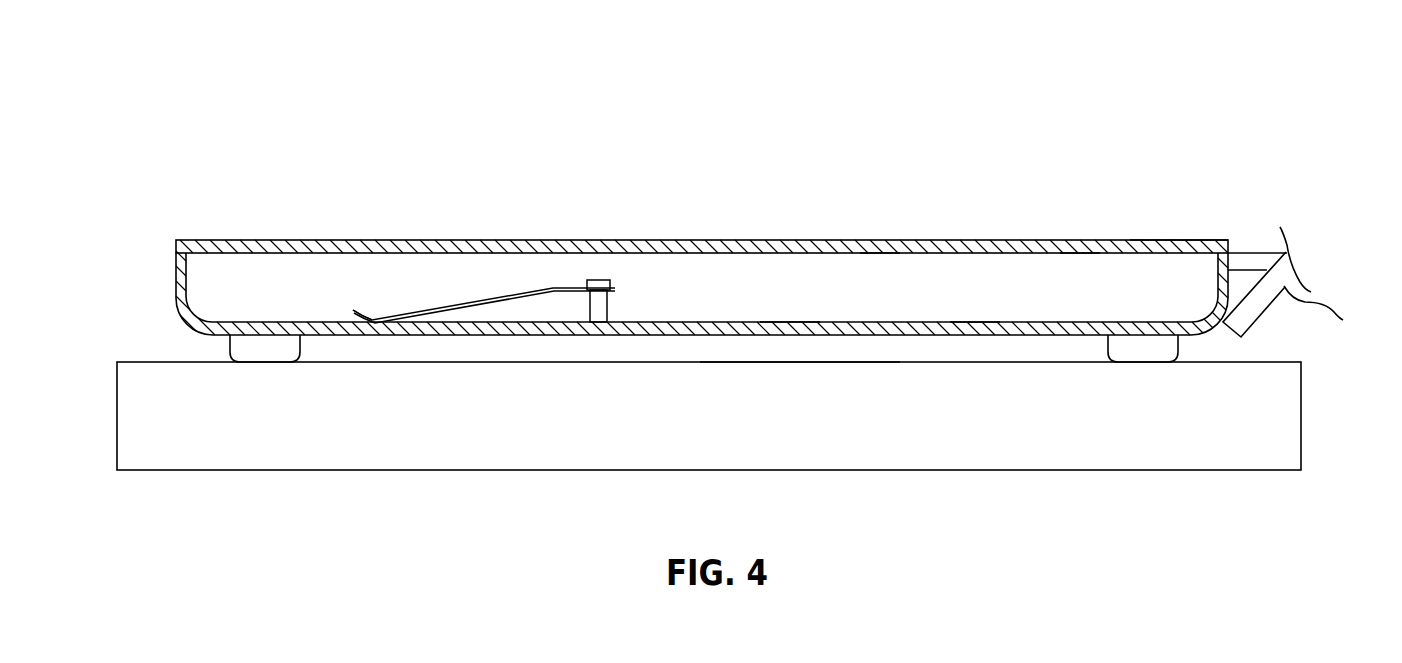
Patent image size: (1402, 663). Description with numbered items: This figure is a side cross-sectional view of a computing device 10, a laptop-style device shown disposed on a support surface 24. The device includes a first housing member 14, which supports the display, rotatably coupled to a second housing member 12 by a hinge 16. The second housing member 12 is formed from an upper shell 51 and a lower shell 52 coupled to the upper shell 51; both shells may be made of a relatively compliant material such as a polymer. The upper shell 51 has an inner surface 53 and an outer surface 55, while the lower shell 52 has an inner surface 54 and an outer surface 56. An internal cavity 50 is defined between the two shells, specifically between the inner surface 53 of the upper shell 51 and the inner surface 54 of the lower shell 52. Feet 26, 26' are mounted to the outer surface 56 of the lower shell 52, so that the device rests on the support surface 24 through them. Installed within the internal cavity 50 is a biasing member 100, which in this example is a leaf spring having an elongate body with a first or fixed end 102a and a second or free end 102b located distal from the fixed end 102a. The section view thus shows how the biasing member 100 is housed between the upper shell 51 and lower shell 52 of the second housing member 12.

The computing device 10 is at (231, 95).
The second housing member 12 is at (175, 257).
The first housing member 14 is at (1329, 281).
The hinge 16 is at (1252, 233).
The support surface 24 is at (143, 362).
The feet 26 is at (1125, 431).
The foot 26' is at (295, 431).
The internal cavity 50 is at (876, 274).
The upper shell 51 is at (228, 239).
The lower shell 52 is at (975, 320).
The inner surface 53 is at (1068, 256).
The inner surface 54 is at (785, 322).
The outer surface 55 is at (1142, 240).
The outer surface 56 is at (820, 335).
The biasing member 100 is at (504, 282).
The fixed end 102a is at (623, 290).
The free end 102b is at (349, 305).